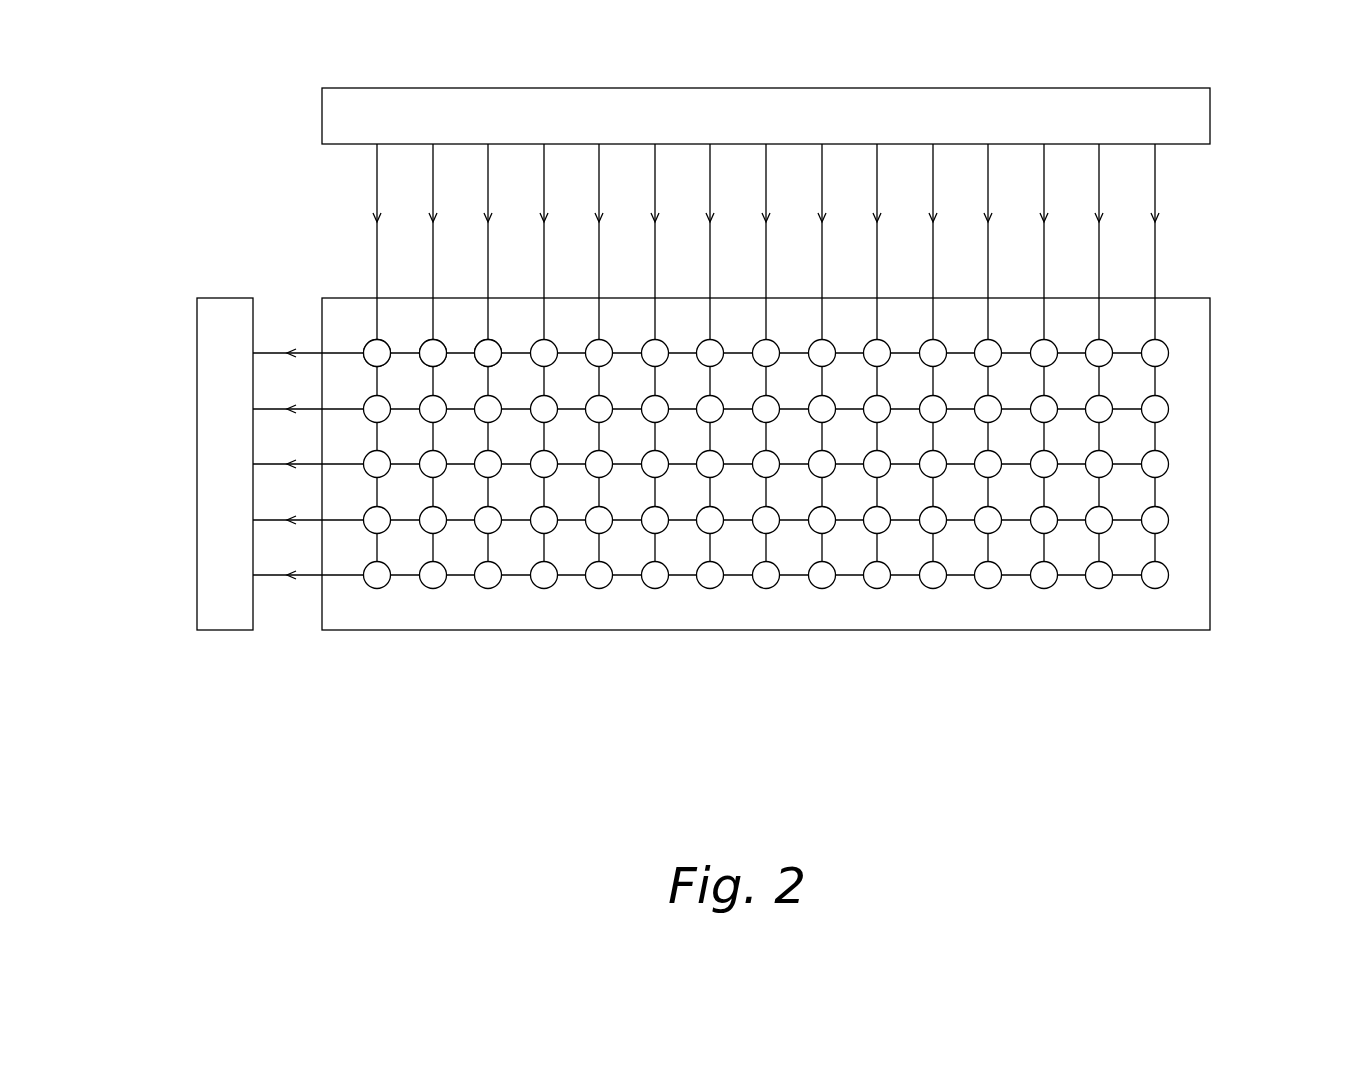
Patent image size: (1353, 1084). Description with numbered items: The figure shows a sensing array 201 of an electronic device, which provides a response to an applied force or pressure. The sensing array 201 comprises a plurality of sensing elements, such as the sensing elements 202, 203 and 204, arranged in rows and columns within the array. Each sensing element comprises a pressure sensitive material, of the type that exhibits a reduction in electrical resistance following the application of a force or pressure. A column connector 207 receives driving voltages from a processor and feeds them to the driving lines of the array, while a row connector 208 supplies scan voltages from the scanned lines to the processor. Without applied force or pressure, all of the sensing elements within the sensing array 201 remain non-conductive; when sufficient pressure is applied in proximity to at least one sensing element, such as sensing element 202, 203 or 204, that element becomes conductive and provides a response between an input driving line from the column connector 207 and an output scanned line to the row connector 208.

The sensing array 201 is at (1185, 305).
The sensing element 202 is at (376, 345).
The sensing element 203 is at (432, 345).
The sensing element 204 is at (490, 345).
The column connector 207 is at (1203, 117).
The row connector 208 is at (205, 463).